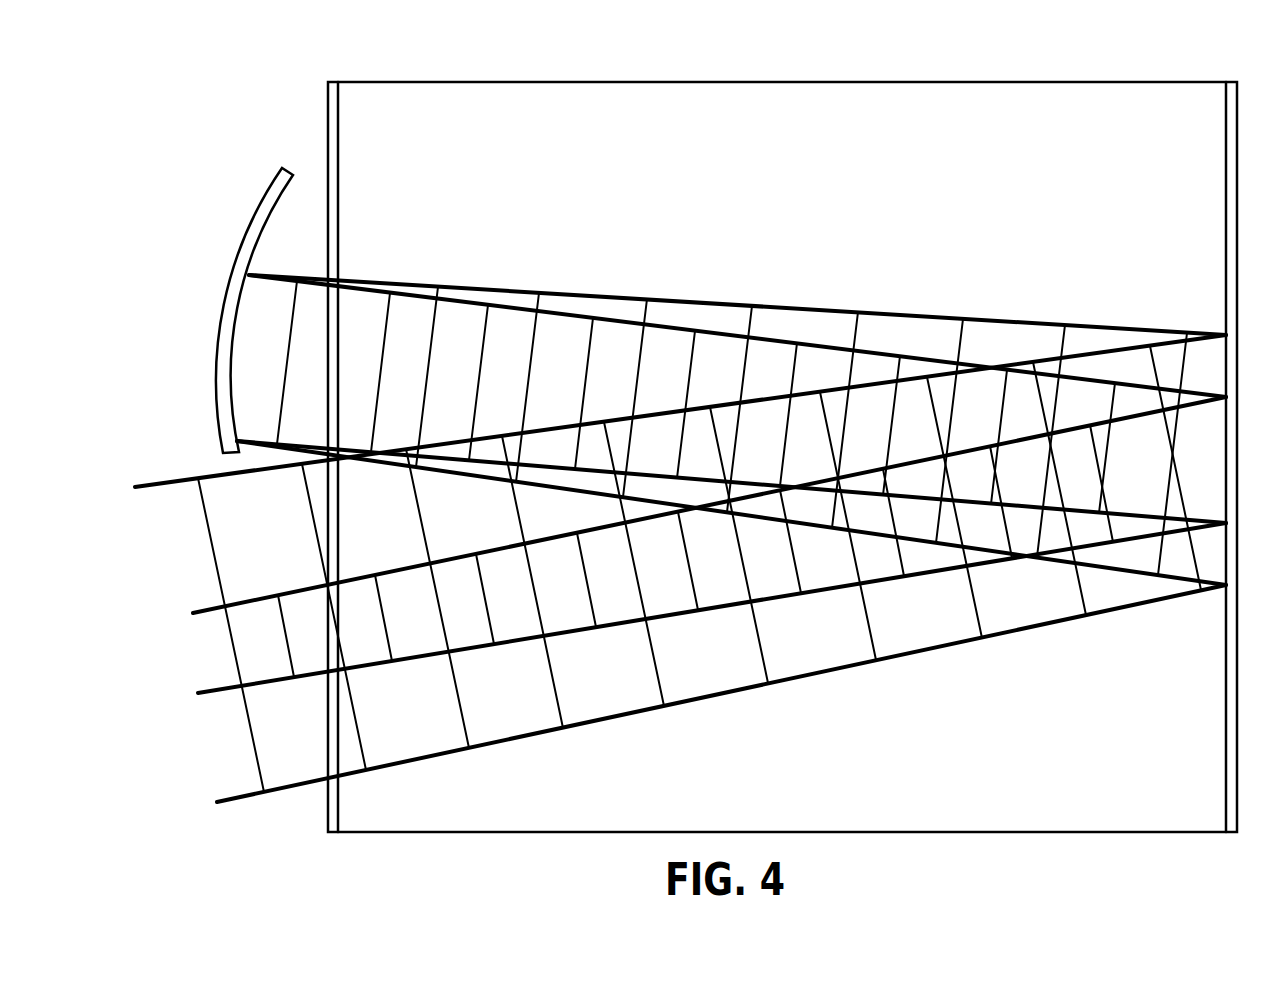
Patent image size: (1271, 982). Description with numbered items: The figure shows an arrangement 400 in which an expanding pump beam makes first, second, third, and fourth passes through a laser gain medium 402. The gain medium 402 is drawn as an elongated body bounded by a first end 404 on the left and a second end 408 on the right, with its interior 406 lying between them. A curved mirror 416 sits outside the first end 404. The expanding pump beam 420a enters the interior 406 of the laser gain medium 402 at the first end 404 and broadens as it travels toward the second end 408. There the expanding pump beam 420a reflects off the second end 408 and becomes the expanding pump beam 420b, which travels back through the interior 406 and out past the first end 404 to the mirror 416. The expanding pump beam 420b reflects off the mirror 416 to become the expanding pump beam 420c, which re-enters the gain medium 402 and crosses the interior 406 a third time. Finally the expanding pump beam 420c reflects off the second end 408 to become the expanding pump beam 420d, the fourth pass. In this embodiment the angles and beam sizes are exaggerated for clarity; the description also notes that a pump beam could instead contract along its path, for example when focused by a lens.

The optical system 400 is at (300, 56).
The laser gain medium 402 is at (897, 82).
The first end 404 is at (338, 115).
The interior 406 is at (776, 130).
The second end 408 is at (1223, 128).
The mirror 416 is at (262, 196).
The expanding pump beam 420a is at (228, 693).
The expanding pump beam 420b is at (1100, 377).
The expanding pump beam 420c is at (1093, 327).
The expanding pump beam 420d is at (230, 806).